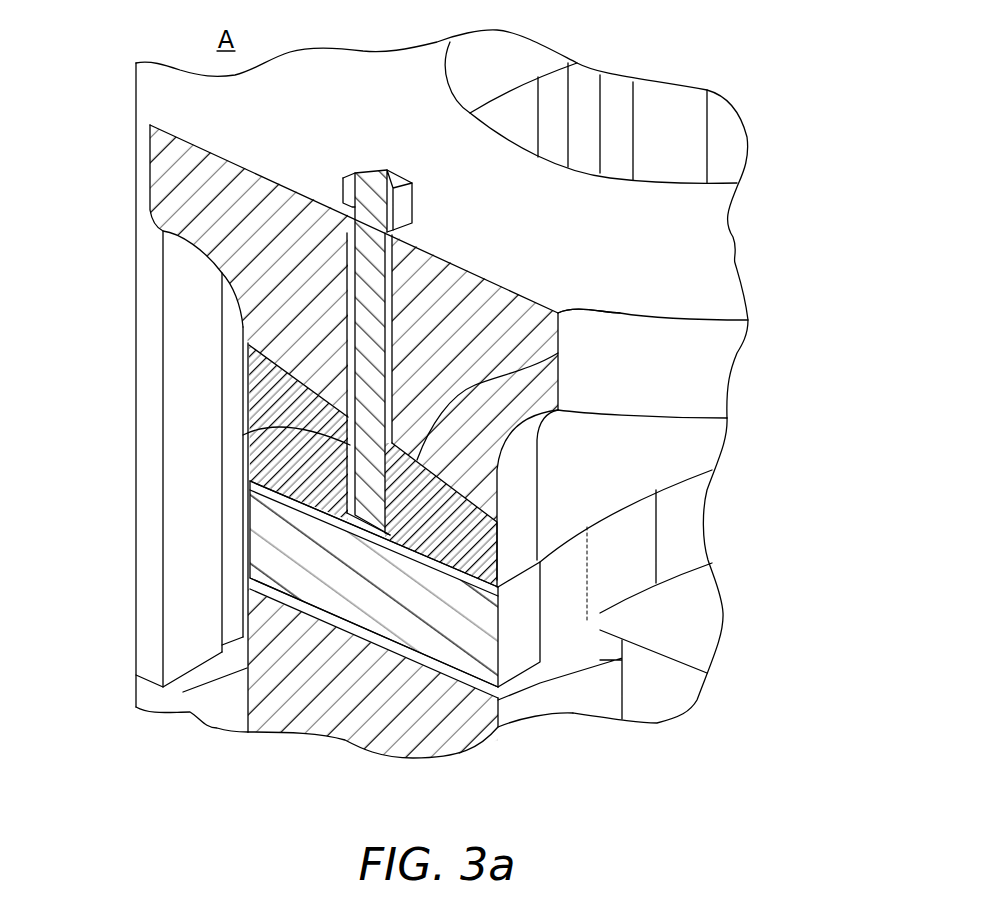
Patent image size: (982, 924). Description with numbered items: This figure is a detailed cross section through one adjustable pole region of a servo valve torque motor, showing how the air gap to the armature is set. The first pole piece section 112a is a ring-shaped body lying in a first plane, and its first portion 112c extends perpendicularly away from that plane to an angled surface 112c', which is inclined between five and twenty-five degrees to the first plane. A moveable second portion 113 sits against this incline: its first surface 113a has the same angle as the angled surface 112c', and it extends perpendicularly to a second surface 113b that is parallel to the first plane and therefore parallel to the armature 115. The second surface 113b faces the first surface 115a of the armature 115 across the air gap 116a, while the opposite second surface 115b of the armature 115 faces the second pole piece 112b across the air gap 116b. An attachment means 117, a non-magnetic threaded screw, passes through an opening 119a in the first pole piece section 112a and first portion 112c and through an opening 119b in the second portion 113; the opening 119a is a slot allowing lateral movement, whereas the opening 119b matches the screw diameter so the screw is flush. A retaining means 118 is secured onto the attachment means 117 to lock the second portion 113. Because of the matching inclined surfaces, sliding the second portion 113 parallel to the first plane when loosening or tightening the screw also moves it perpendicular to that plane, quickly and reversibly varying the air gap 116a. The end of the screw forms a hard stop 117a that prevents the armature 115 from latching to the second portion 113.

The first pole piece section 112a is at (713, 240).
The second pole piece 112b is at (306, 722).
The first portion 112c is at (158, 428).
The angled surface 112c' is at (596, 290).
The second portion 113 is at (260, 387).
The first surface 113a is at (455, 488).
The second surface 113b is at (447, 560).
The armature 115 is at (273, 532).
The first surface 115a is at (252, 478).
The second surface 115b is at (263, 587).
The air gap 116a is at (513, 580).
The air gap 116b is at (498, 695).
The attachment means 117 is at (377, 313).
The hard stop 117a is at (383, 540).
The retaining means 118 is at (411, 213).
The opening 119a is at (347, 256).
The opening 119b is at (249, 437).